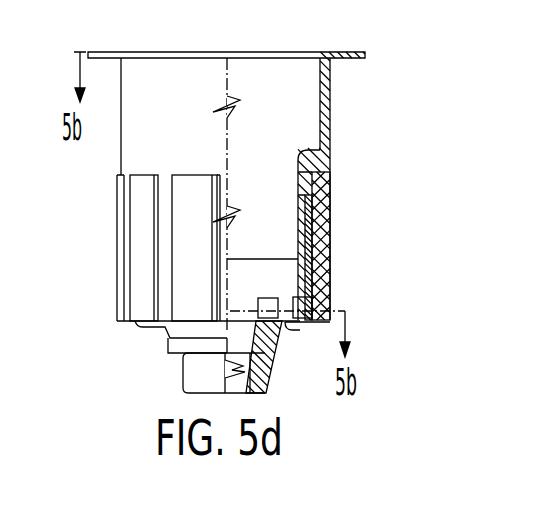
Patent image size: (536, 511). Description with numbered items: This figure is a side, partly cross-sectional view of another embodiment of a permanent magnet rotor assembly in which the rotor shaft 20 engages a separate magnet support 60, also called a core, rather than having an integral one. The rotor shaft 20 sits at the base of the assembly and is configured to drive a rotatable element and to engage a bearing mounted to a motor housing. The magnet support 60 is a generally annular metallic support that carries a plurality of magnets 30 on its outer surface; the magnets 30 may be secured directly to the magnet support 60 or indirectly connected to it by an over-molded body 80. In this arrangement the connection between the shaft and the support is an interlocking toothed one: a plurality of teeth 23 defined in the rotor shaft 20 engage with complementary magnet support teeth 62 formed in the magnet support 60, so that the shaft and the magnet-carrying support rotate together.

The rotor shaft 20 is at (330, 313).
The teeth 23 is at (276, 352).
The magnets 30 is at (330, 285).
The magnet support 60 is at (330, 258).
The magnet support teeth 62 is at (288, 322).
The over-molded body 80 is at (330, 230).